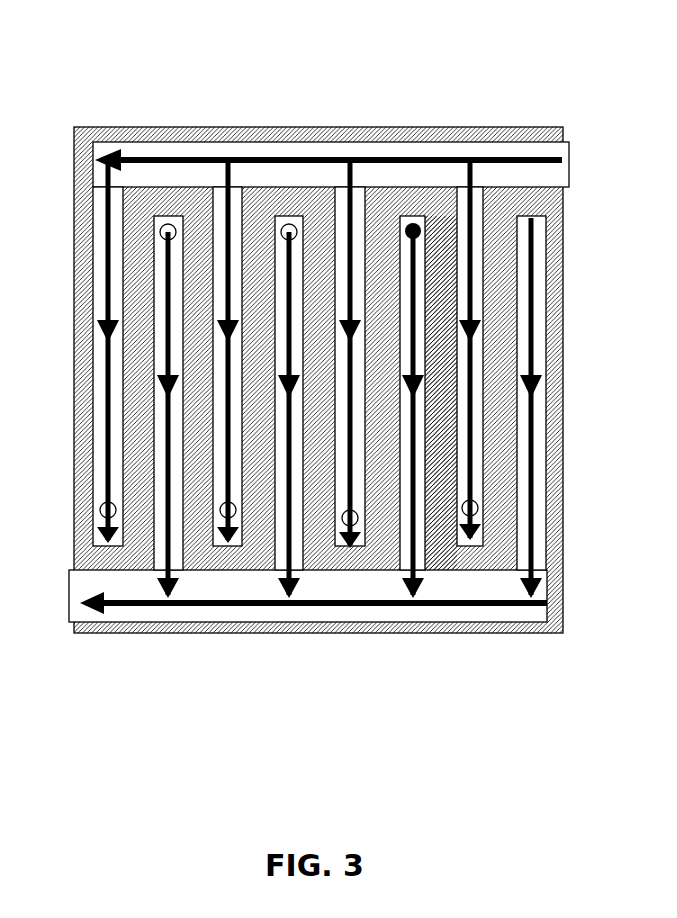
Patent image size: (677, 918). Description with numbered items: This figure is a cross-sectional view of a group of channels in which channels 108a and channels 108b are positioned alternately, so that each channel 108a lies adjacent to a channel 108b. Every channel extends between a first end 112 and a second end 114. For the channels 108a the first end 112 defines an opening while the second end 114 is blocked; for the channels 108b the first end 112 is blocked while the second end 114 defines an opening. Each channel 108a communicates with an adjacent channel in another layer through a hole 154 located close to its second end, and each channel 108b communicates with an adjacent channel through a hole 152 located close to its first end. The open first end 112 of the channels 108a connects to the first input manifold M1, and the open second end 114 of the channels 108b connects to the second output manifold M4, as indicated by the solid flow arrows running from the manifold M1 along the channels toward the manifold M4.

The channels 108a is at (480, 207).
The channels 108b is at (423, 565).
The first end 112 is at (412, 215).
The second end 114 is at (418, 528).
The hole 152 is at (410, 226).
The hole 154 is at (465, 548).
The first input manifold M1 is at (565, 153).
The second output manifold M4 is at (70, 600).